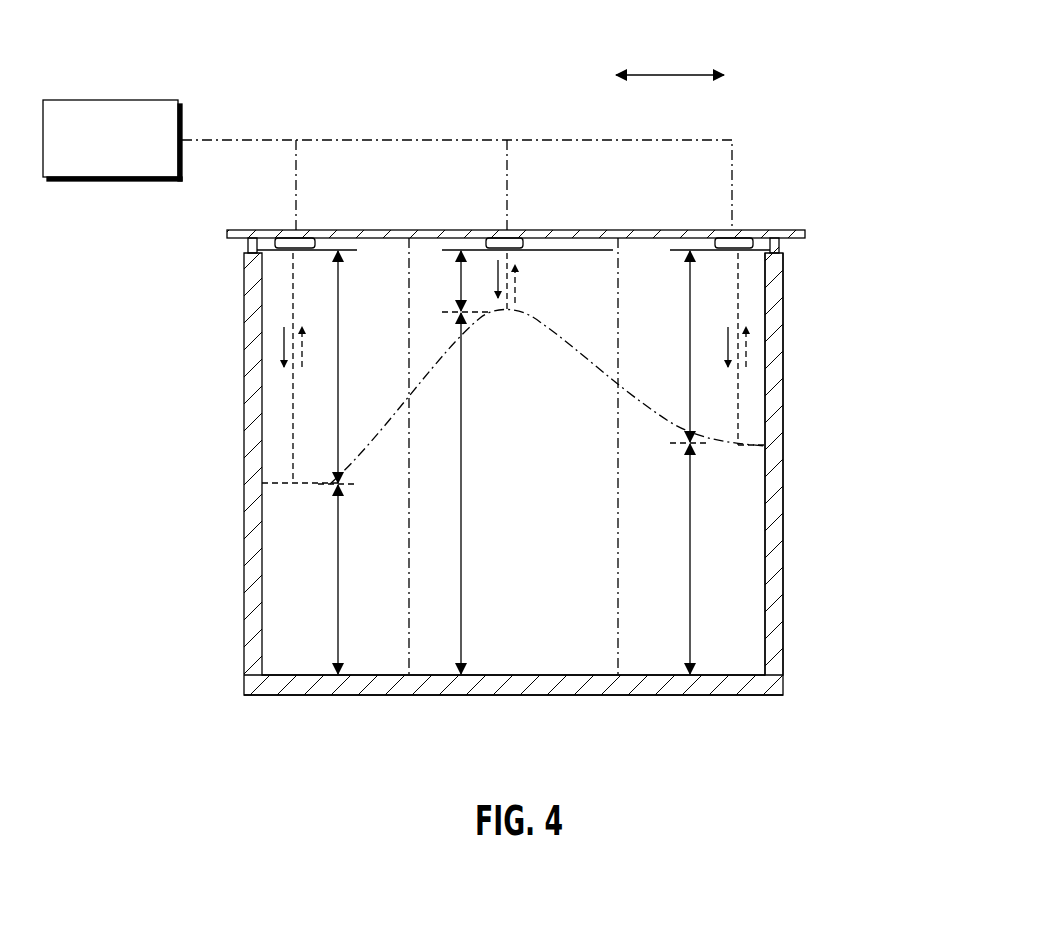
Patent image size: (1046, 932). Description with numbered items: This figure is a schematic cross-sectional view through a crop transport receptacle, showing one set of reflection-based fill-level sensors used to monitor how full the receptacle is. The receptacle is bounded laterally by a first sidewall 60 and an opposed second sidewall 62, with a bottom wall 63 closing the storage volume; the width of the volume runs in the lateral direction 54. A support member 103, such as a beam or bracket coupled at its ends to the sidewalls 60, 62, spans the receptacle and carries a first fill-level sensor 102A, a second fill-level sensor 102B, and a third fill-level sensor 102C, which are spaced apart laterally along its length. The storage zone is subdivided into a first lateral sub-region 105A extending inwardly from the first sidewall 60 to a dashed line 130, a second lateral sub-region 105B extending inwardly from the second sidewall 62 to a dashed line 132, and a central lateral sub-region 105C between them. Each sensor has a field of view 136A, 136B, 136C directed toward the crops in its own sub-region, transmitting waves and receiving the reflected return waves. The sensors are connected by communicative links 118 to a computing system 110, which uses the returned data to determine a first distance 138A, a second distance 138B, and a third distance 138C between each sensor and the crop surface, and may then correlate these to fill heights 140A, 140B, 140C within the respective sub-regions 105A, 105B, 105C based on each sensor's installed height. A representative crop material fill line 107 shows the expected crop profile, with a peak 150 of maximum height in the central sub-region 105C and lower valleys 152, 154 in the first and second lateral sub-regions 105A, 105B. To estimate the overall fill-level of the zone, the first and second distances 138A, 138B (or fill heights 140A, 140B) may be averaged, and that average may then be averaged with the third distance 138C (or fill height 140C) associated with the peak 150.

The lateral direction 54 is at (672, 75).
The first sidewall 60 is at (244, 444).
The second sidewall 62 is at (783, 552).
The bottom wall 63 is at (563, 695).
The first fill-level sensor 102A is at (300, 233).
The second fill-level sensor 102B is at (745, 240).
The third fill-level sensor 102C is at (515, 240).
The support member 103 is at (578, 232).
The first lateral sub-region 105A is at (397, 527).
The second lateral sub-region 105B is at (677, 511).
The central lateral sub-region 105C is at (565, 470).
The crop material fill line 107 is at (592, 368).
The computing system 110 is at (128, 157).
The communicative link 118 is at (402, 136).
The dashed line 130 is at (408, 650).
The dashed line 132 is at (620, 650).
The field of view 136A is at (292, 300).
The field of view 136B is at (740, 299).
The field of view 136C is at (518, 287).
The first distance 138A is at (340, 362).
The second distance 138B is at (690, 345).
The third distance 138C is at (460, 265).
The fill height 140A is at (340, 607).
The fill height 140B is at (692, 550).
The fill height 140C is at (463, 545).
The peak 150 is at (468, 330).
The valley 152 is at (282, 484).
The valley 154 is at (740, 452).